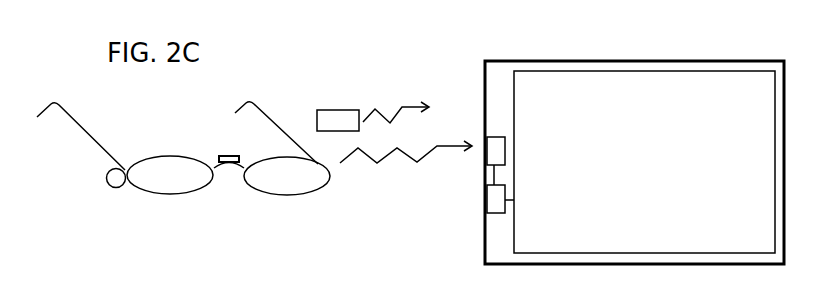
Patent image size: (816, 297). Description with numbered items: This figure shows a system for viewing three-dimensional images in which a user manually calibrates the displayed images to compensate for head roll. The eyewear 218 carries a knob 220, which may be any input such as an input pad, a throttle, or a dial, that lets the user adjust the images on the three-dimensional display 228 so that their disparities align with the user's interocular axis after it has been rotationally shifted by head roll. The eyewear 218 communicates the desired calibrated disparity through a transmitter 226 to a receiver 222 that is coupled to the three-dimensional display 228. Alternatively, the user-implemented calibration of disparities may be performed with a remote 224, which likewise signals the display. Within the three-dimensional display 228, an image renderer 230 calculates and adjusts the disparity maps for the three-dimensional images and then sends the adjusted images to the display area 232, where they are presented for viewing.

The eyewear 218 is at (234, 175).
The knob 220 is at (106, 177).
The receiver 222 is at (494, 145).
The remote 224 is at (338, 110).
The transmitter 226 is at (227, 156).
The 3D display 228 is at (633, 59).
The image renderer 230 is at (495, 205).
The display area 232 is at (524, 89).